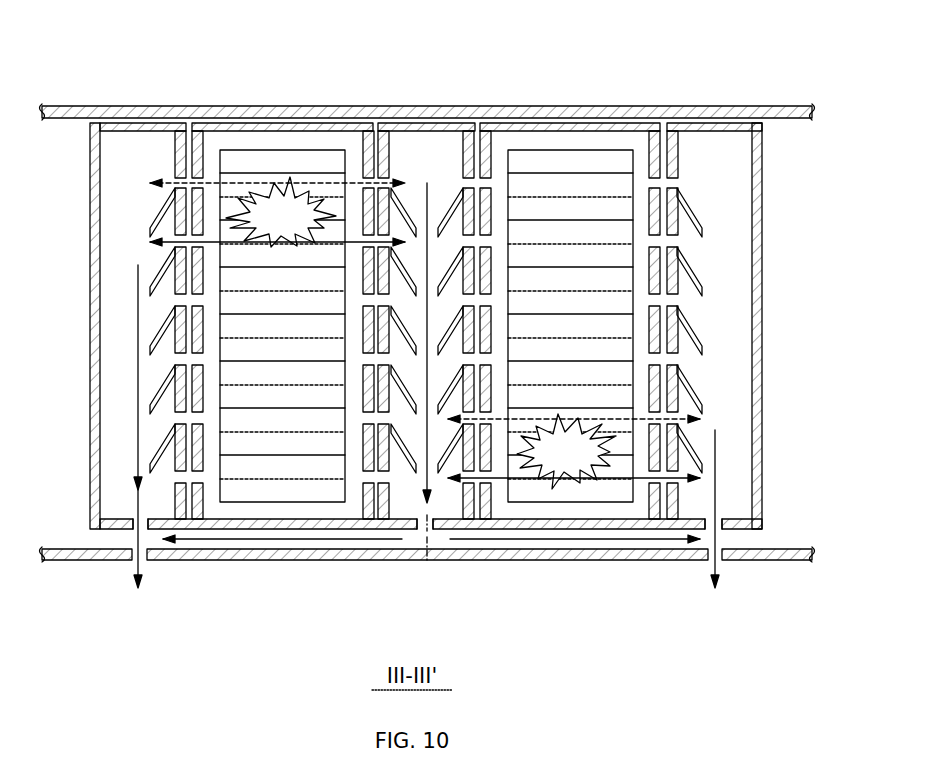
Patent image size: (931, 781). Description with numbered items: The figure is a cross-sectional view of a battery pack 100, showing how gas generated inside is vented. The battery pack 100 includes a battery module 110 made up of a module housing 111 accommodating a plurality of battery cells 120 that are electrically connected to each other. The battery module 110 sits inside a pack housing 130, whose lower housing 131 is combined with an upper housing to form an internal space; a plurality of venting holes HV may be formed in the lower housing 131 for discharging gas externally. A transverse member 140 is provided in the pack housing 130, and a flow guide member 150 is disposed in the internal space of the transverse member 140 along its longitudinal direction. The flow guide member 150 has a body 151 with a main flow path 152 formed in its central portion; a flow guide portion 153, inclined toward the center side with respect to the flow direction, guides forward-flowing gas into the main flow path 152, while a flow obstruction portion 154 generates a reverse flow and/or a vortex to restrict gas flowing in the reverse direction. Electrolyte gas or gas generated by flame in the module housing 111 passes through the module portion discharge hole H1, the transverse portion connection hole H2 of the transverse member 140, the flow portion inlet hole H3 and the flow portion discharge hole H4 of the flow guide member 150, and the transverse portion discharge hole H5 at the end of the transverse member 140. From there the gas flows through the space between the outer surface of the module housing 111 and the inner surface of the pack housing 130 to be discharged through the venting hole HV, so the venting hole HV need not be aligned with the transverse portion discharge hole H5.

The battery pack 100 is at (58, 55).
The battery module 110 is at (313, 110).
The module housing 111 is at (208, 128).
The battery cell 120 is at (268, 157).
The pack housing 130 is at (427, 589).
The lower housing 131 is at (276, 560).
The transverse member 140 is at (416, 286).
The flow guide member 150 is at (481, 286).
The body 151 is at (467, 163).
The main flow path 152 is at (433, 167).
The flow guide portion 153 is at (160, 344).
The flow obstruction portion 154 is at (160, 353).
The module portion discharge hole H1 is at (201, 486).
The transverse portion connection hole H2 is at (180, 482).
The flow portion inlet hole H3 is at (164, 481).
The flow portion discharge hole H4 is at (132, 490).
The transverse portion discharge hole H5 is at (136, 503).
The venting hole HV is at (124, 554).